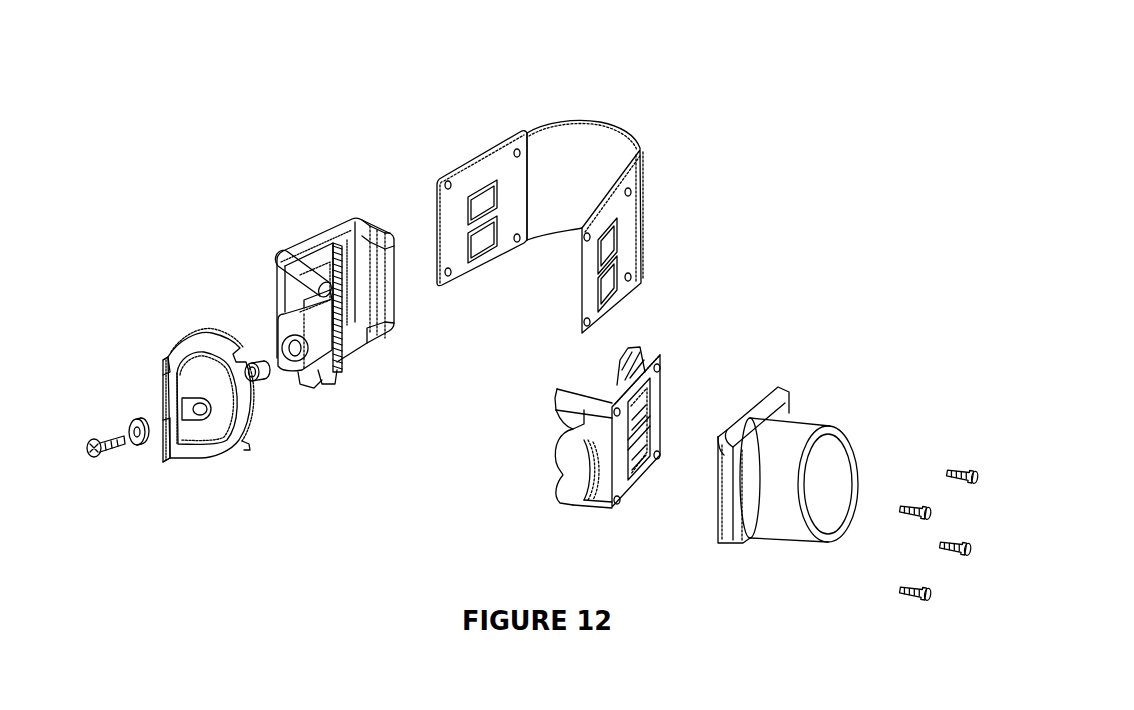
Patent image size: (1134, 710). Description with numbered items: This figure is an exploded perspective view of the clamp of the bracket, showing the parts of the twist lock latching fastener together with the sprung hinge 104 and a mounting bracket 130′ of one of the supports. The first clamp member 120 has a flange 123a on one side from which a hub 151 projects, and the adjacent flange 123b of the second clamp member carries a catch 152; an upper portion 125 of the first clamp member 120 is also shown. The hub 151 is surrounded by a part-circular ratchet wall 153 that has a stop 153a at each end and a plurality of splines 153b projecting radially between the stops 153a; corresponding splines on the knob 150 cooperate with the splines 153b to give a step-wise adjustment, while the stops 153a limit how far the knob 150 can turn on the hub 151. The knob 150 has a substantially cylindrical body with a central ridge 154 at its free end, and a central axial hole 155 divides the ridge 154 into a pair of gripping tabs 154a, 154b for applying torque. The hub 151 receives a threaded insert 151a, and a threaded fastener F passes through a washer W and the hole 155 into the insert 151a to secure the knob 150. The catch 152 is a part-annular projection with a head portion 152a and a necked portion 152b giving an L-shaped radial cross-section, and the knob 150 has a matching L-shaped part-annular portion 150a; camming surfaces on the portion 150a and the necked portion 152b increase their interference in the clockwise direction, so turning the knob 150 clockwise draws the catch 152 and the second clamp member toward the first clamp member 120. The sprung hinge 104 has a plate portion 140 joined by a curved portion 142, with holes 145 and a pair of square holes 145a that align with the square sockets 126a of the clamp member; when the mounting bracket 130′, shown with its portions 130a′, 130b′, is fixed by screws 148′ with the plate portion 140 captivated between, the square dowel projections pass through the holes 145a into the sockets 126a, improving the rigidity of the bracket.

The sprung hinge 104 is at (677, 135).
The first clamp member 120 is at (309, 220).
The flange 123a is at (302, 297).
The flange 123b is at (587, 493).
The channel 125 is at (370, 266).
The square sockets 126a is at (337, 278).
The mounting bracket 130′ is at (857, 409).
The flange 130a′ is at (760, 402).
The tube 130b′ is at (773, 523).
The plate portion 140 is at (492, 158).
The curved portion 142 is at (598, 198).
The fastener holes 145 is at (522, 238).
The square holes 145a is at (480, 196).
The fasteners 148′ is at (903, 590).
The knob 150 is at (266, 441).
The part-annular portion 150a is at (247, 437).
The hub 151 is at (320, 343).
The threaded insert 151a is at (260, 360).
The catch 152 is at (567, 497).
The head portion 152a is at (574, 480).
The necked portion 152b is at (576, 422).
The ratchet wall 153 is at (318, 374).
The stop 153a is at (308, 378).
The splines 153b is at (300, 314).
The central ridge 154 is at (87, 397).
The gripping tab 154a is at (160, 370).
The gripping tab 154b is at (163, 440).
The central axial hole 155 is at (203, 408).
The threaded fastener F is at (113, 450).
The washer W is at (143, 437).